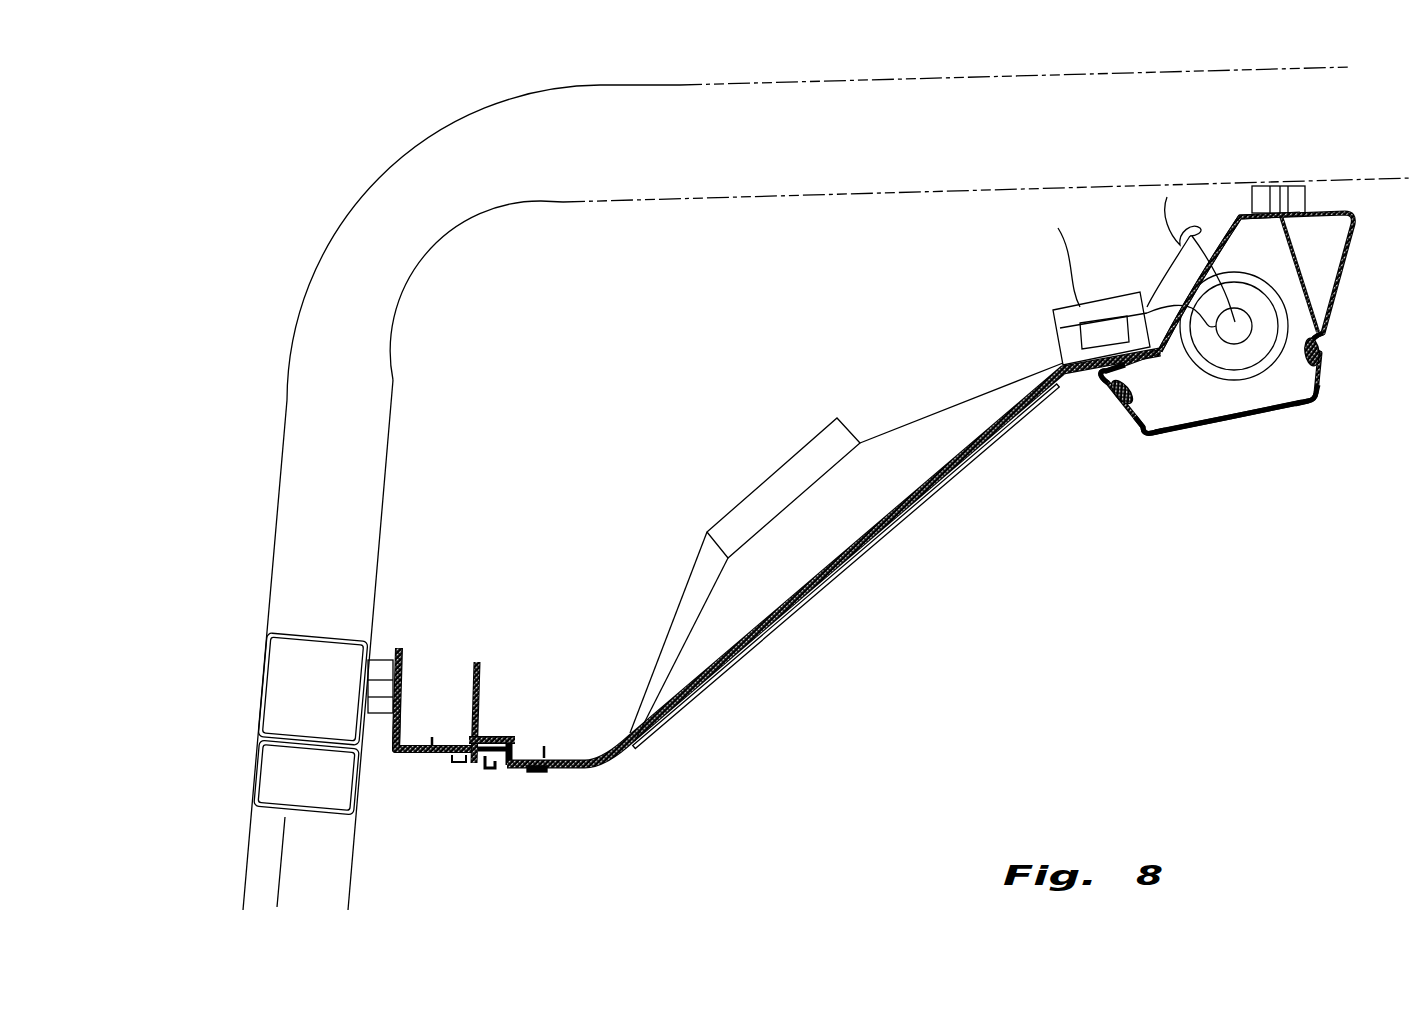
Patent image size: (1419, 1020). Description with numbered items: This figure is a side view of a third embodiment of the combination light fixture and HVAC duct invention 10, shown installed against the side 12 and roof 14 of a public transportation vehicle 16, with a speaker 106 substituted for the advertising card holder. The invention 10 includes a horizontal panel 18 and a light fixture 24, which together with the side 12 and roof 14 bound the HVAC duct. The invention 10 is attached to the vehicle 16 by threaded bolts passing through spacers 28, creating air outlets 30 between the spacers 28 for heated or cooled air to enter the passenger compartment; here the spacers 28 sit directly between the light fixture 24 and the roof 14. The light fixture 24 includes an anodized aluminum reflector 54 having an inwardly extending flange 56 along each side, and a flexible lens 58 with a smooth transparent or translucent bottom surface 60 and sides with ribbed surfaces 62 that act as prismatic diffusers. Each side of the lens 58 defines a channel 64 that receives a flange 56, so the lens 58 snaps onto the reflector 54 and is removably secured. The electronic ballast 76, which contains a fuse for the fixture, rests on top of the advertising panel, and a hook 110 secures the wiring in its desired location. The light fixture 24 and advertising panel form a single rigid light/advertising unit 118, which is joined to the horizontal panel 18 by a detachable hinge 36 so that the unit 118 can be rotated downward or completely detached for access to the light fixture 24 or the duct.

The invention 10 is at (957, 692).
The side 12 is at (348, 464).
The roof 14 is at (845, 162).
The public transportation vehicle 16 is at (466, 202).
The horizontal panel 18 is at (432, 758).
The light fixture 24 is at (1180, 560).
The spacers 28 is at (400, 683).
The air outlets 30 is at (387, 636).
The detachable hinge 36 is at (493, 792).
The reflector 54 is at (1236, 212).
The inwardly extending flange 56 is at (1330, 330).
The lens 58 is at (1270, 414).
The bottom surface 60 is at (1207, 428).
The ribbed surfaces 62 is at (1305, 403).
The channel 64 is at (1325, 372).
The electronic ballast 76 is at (1063, 303).
The speaker 106 is at (838, 552).
The hook 110 is at (1180, 248).
The light/advertising unit 118 is at (828, 724).